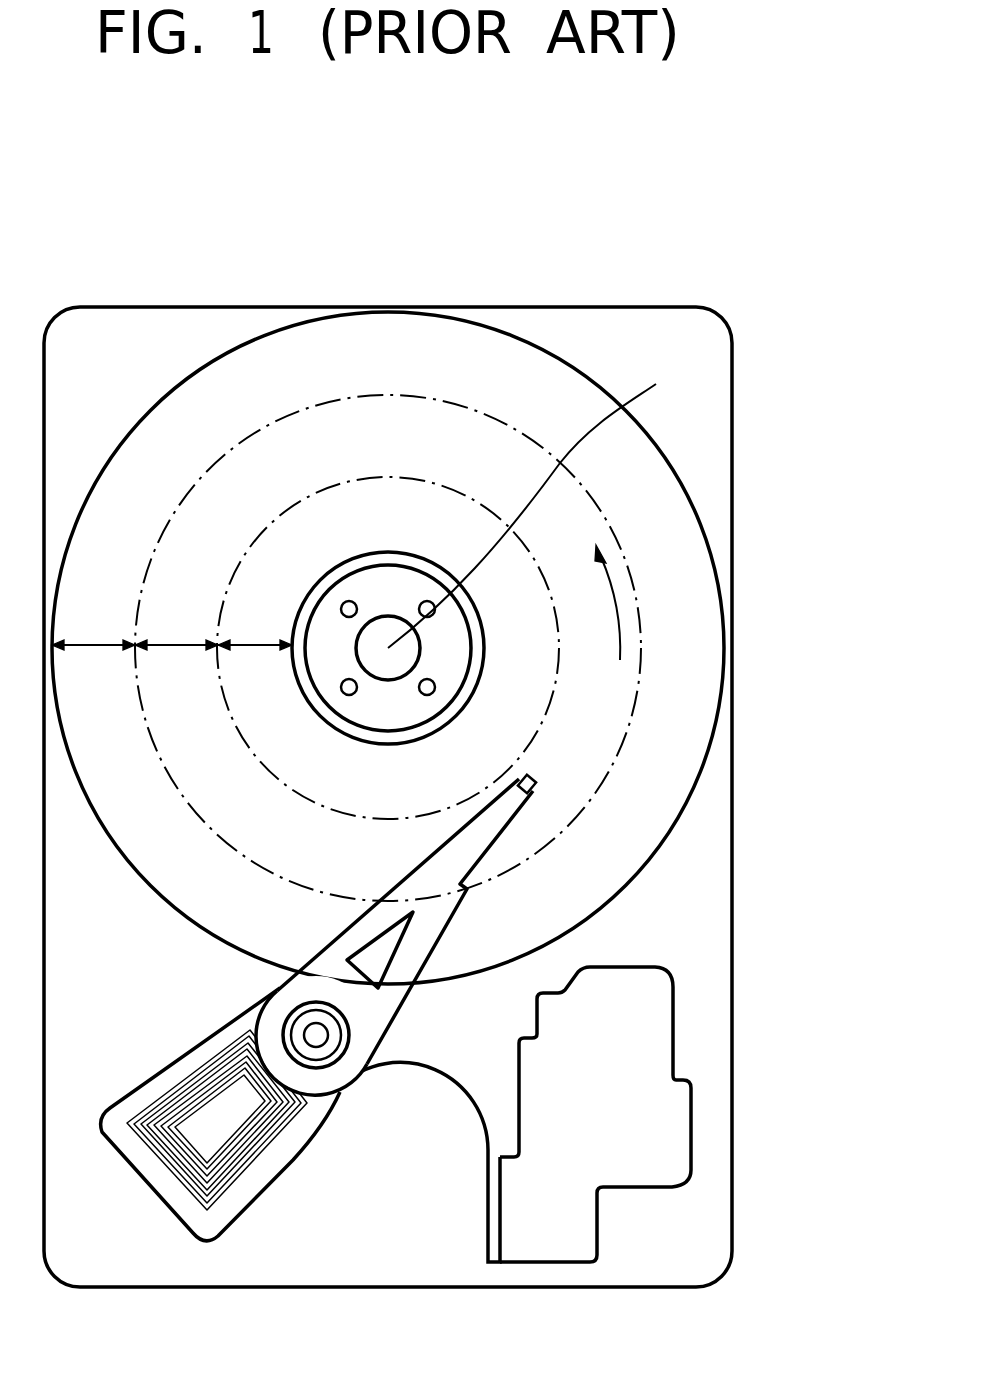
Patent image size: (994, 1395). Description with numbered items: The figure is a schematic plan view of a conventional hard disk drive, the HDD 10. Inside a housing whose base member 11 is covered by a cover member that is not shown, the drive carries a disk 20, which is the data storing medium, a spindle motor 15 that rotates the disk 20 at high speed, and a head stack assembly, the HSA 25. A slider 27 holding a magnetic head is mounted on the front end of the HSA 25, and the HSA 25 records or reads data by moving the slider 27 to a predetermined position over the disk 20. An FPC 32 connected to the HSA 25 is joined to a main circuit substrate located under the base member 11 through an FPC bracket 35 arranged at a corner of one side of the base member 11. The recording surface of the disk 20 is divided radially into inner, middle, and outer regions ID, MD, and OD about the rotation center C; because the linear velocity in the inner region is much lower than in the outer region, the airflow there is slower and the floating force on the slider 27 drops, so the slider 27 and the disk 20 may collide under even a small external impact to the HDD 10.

The HDD 10 is at (689, 241).
The base member 11 is at (700, 444).
The disk 20 is at (703, 620).
The spindle motor 15 is at (448, 643).
The HSA (head stack assembly) 25 is at (338, 1124).
The slider 27 is at (537, 792).
The FPC (flexible printed circuit) 32 is at (455, 1068).
The FPC bracket 35 is at (694, 1117).